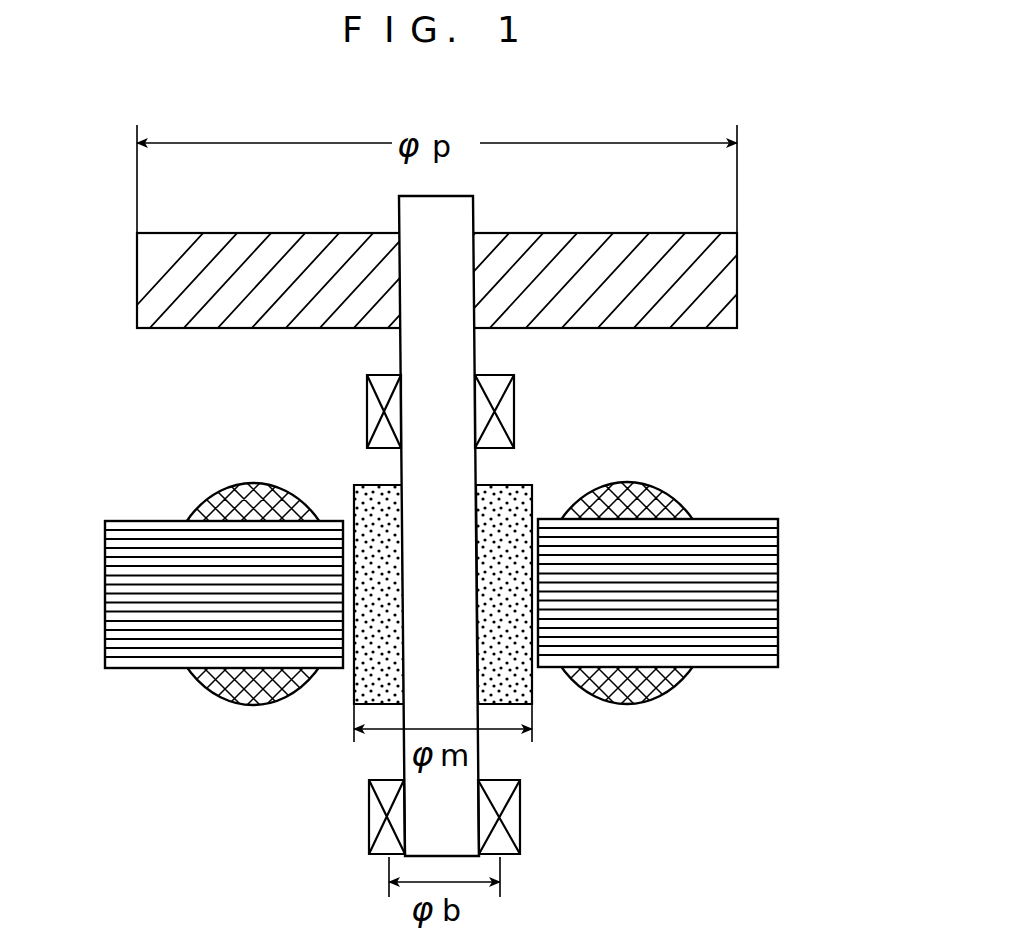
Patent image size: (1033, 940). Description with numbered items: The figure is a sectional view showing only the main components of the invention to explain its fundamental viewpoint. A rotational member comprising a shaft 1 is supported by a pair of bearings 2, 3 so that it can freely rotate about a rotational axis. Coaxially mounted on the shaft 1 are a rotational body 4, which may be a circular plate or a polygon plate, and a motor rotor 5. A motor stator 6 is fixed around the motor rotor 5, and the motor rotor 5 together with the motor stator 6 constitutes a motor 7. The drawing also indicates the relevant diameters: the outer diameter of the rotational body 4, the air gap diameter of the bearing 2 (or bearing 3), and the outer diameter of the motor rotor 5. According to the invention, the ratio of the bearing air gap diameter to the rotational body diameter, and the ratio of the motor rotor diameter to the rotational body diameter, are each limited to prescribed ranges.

The shaft 1 is at (458, 353).
The bearing 2 is at (520, 814).
The bearing 3 is at (514, 410).
The rotational body 4 is at (692, 312).
The motor rotor 5 is at (355, 683).
The motor stator 6 is at (163, 535).
The motor 7 is at (312, 462).